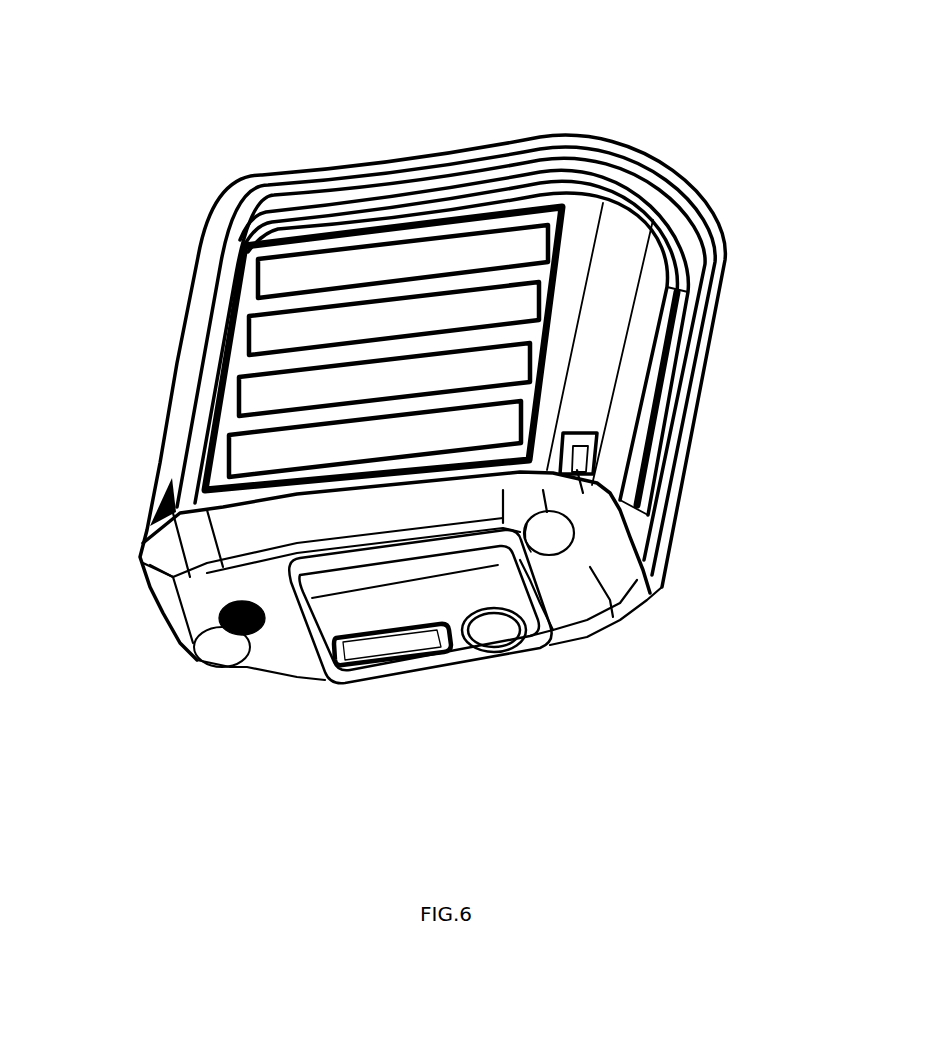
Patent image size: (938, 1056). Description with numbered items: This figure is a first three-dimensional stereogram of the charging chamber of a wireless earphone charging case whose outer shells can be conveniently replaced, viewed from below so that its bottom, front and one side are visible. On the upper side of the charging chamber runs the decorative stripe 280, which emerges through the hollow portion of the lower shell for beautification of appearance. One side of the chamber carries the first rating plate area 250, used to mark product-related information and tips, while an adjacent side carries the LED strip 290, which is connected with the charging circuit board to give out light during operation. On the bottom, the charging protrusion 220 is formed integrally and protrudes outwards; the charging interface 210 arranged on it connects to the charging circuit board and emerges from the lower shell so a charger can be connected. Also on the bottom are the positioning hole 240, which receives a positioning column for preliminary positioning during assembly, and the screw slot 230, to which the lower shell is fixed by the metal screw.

The decorative stripe 280 is at (393, 168).
The first rating plate area 250 is at (373, 323).
The LED strip 290 is at (672, 378).
The positioning hole 240 is at (563, 543).
The charging protrusion 220 is at (452, 566).
The charging interface 210 is at (397, 648).
The screw slot 230 is at (225, 635).